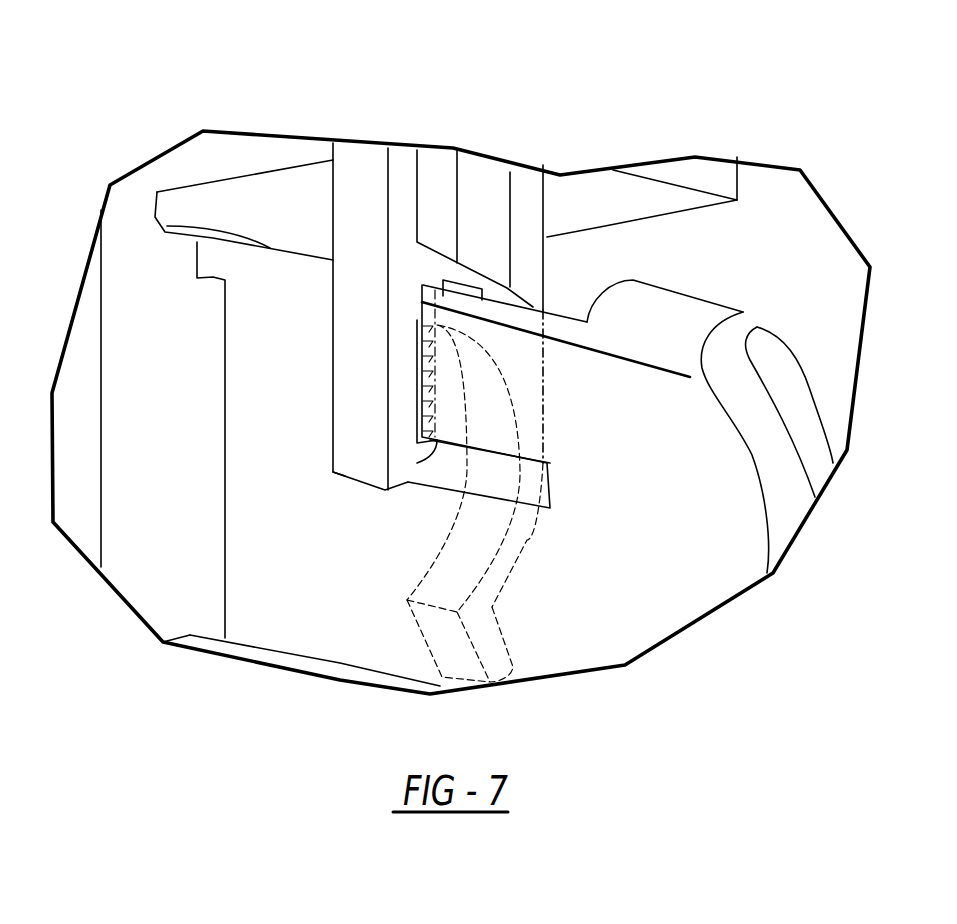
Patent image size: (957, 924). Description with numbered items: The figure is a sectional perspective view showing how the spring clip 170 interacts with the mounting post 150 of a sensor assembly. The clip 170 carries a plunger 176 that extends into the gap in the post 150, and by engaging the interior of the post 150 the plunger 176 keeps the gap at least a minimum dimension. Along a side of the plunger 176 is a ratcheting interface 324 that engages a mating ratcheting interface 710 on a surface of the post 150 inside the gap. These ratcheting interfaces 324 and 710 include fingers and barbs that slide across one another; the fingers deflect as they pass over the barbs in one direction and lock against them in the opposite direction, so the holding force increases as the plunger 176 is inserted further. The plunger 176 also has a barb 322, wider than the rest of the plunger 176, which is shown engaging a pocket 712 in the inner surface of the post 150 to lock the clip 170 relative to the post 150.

The post 150 is at (628, 393).
The clip 170 is at (347, 313).
The plunger 176 is at (357, 415).
The barb 322 is at (412, 455).
The ratcheting interface 324 is at (417, 387).
The ratcheting interface 710 is at (419, 356).
The pocket 712 is at (497, 475).